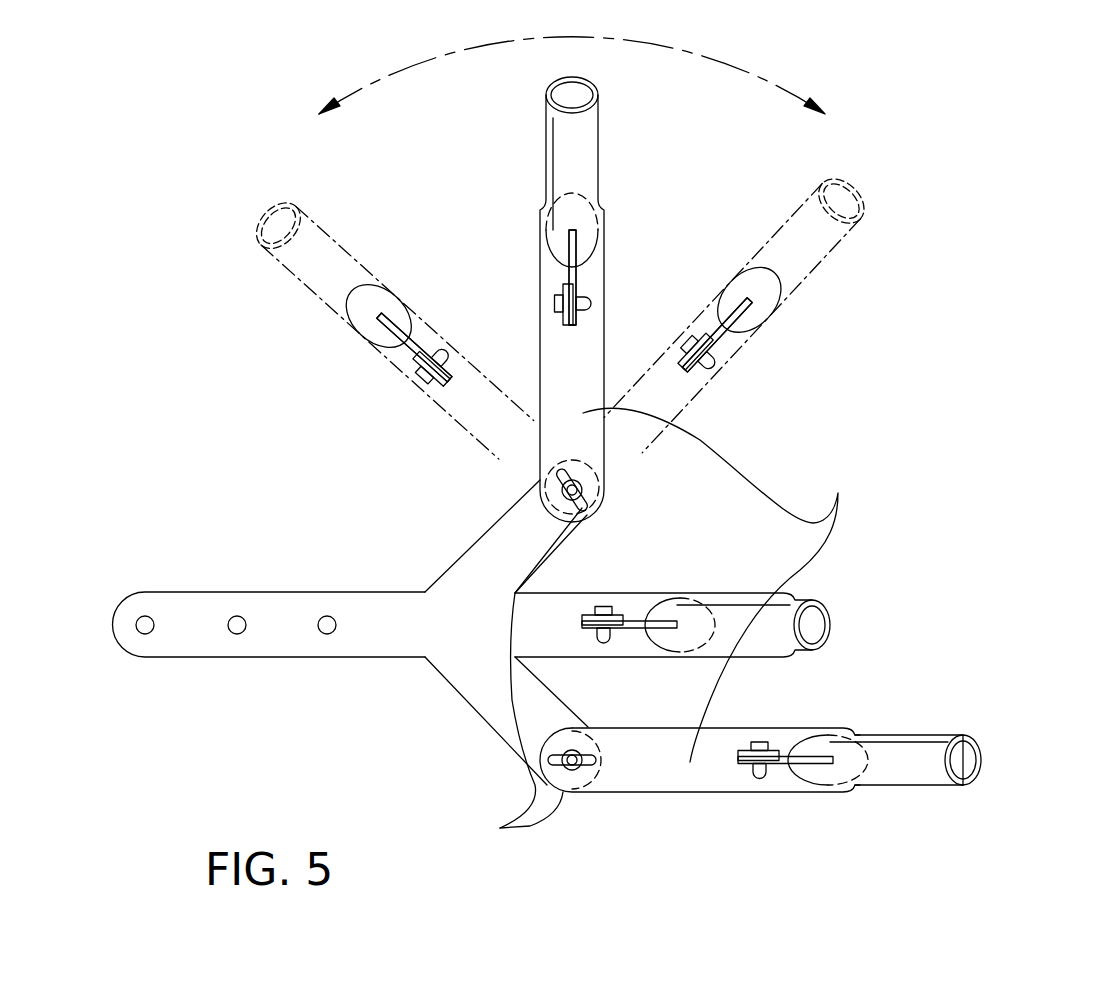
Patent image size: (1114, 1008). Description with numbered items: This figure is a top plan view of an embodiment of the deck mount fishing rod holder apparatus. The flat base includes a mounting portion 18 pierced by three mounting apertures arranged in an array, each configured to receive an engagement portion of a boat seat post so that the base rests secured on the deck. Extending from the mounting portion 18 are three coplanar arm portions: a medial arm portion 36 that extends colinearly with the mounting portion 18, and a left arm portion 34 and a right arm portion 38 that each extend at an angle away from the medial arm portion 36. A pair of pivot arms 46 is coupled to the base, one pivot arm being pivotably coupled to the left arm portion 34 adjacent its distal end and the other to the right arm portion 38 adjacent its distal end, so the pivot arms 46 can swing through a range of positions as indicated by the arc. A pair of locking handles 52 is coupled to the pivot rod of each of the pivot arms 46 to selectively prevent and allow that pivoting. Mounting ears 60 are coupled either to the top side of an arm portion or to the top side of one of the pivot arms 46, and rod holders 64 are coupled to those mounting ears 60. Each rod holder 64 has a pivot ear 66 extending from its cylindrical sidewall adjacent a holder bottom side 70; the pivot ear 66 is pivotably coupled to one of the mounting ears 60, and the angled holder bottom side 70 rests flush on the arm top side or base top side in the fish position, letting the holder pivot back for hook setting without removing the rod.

The mounting portion 18 is at (422, 663).
The left arm portion 34 is at (478, 542).
The medial arm portion 36 is at (570, 603).
The right arm portion 38 is at (497, 703).
The pivot arms 46 is at (721, 585).
The locking handles 52 is at (518, 680).
The mounting ears 60 is at (777, 752).
The rod holders 64 is at (900, 770).
The pivot ear 66 is at (762, 778).
The holder bottom side 70 is at (968, 760).